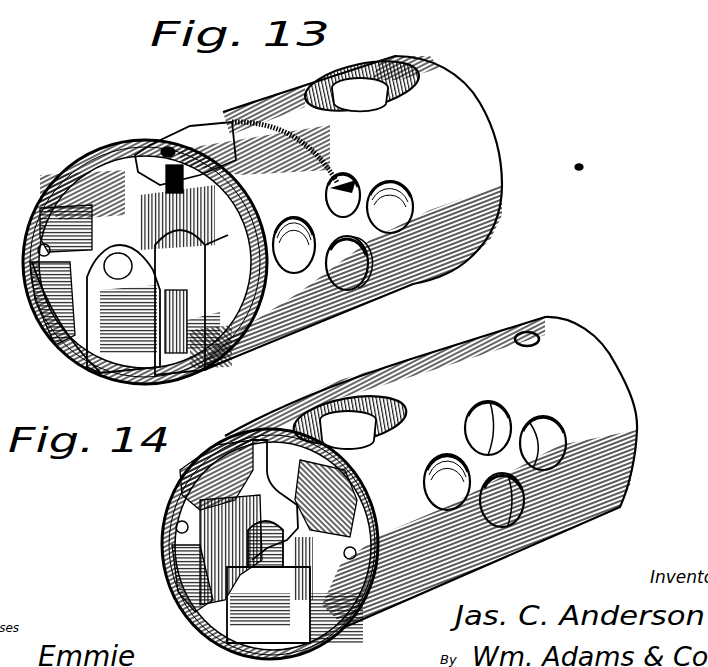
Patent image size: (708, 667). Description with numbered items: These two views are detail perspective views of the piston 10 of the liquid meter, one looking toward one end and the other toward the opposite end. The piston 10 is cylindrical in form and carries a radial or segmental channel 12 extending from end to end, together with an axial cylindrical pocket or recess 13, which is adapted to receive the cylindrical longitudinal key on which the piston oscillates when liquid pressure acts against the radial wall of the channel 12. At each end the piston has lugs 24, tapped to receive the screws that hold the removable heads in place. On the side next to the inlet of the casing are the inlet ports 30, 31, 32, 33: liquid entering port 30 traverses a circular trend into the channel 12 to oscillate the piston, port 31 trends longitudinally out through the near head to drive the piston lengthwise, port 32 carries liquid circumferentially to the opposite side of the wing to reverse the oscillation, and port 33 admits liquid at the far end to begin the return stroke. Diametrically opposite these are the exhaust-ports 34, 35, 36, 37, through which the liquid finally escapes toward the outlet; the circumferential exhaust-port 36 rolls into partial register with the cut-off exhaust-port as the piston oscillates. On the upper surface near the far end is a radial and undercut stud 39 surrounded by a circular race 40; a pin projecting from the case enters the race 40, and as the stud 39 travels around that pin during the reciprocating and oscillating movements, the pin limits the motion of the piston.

In FIG. 13, the piston 10 is at (303, 220).
In FIG. 13, the radial or segmental channel 12 is at (174, 312).
In FIG. 14, the radial or segmental channel 12 is at (267, 596).
In FIG. 13, the axial cylindrical pocket or recess 13 is at (123, 309).
In FIG. 14, the axial cylindrical pocket or recess 13 is at (249, 522).
In FIG. 13, the lugs 24 is at (84, 233).
In FIG. 14, the lugs 24 is at (399, 488).
In FIG. 13, the port 31 is at (230, 124).
In FIG. 13, the exhaust-port 37 is at (343, 197).
In FIG. 14, the exhaust-port 37 is at (497, 399).
In FIG. 13, the radial and undercut stud 39 is at (383, 83).
In FIG. 14, the radial and undercut stud 39 is at (367, 375).
In FIG. 13, the circular race 40 is at (333, 87).
In FIG. 14, the circular race 40 is at (379, 412).
In FIG. 13, the exhaust-port 34 is at (399, 210).
In FIG. 13, the exhaust-port 35 is at (349, 263).
In FIG. 13, the circumferential exhaust-port 36 is at (294, 245).
In FIG. 14, the port 30 is at (447, 482).
In FIG. 14, the port 32 is at (573, 427).
In FIG. 14, the port 33 is at (502, 500).